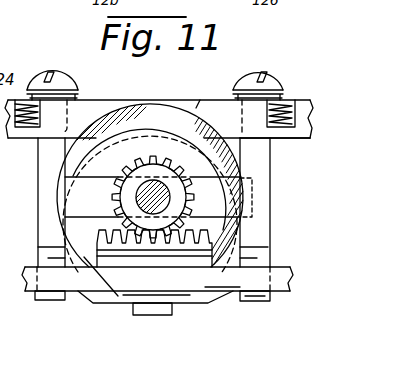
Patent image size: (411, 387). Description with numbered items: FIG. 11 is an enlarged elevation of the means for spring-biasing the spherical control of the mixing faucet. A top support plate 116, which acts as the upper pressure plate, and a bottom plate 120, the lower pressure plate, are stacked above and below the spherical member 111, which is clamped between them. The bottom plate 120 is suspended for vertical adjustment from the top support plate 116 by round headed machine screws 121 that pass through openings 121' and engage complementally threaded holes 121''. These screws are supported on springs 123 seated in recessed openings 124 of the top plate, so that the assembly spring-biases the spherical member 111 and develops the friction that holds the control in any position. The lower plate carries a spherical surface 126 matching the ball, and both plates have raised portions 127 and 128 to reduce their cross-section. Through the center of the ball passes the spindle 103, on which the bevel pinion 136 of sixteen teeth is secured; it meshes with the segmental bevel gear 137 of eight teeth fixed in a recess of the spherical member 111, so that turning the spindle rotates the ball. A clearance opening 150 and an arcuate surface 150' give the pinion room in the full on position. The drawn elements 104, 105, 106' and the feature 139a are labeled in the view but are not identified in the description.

The spindle 103 is at (170, 193).
The frame member 104 is at (9, 314).
The frame side member 105 is at (135, 202).
The frame inner member 106' is at (134, 202).
The spherical member 111 is at (148, 118).
The top support plate 116 is at (88, 106).
The bottom plate 120 is at (284, 283).
The round headed machine screws 121 is at (156, 90).
The openings 121' is at (73, 88).
The threaded holes 121'' is at (150, 297).
The springs 123 is at (281, 110).
The recessed openings 124 is at (284, 142).
The spherical surface 126 is at (97, 281).
The raised portion 127 is at (200, 100).
The raised portion 128 is at (120, 298).
The bevel pinion 136 is at (121, 168).
The bevel gear 137 is at (216, 273).
The shaft end 139a is at (232, 180).
The clearance opening 150 is at (150, 172).
The arcuate surface 150' is at (149, 176).